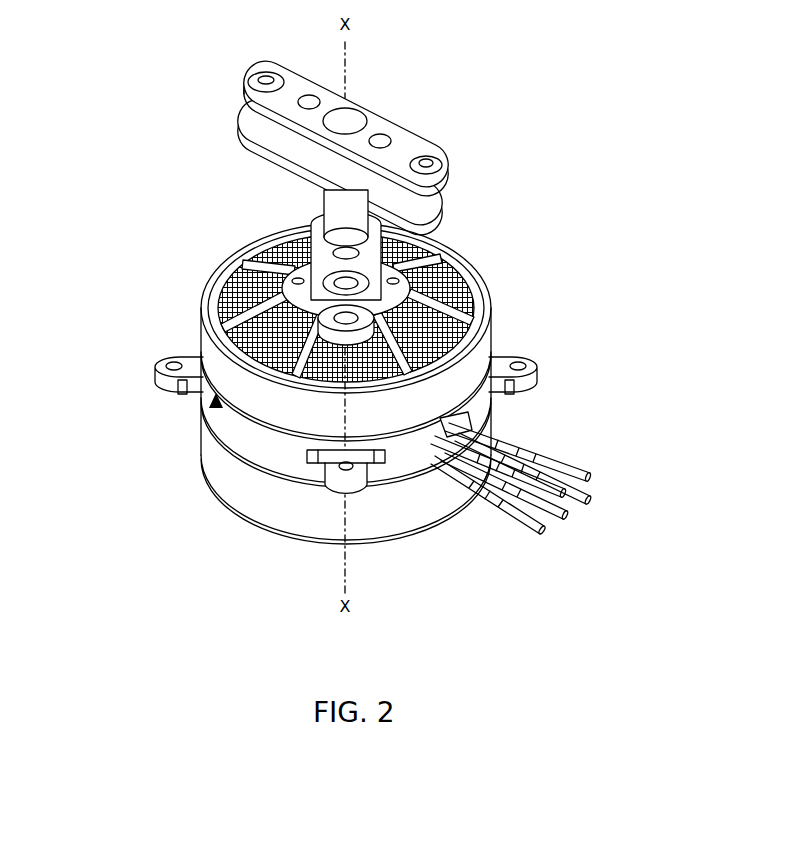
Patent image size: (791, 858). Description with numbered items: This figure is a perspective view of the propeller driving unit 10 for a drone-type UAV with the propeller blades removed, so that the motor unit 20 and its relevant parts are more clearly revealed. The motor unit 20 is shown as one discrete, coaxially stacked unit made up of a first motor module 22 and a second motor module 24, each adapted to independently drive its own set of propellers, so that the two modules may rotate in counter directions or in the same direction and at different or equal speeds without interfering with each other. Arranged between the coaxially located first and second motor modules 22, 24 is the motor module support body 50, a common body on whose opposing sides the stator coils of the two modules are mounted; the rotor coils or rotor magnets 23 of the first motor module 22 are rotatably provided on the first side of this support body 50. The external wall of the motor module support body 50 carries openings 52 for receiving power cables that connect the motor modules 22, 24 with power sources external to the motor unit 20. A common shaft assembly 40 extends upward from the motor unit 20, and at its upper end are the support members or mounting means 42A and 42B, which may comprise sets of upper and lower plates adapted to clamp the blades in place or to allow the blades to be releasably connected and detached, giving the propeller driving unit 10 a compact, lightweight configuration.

The propeller driving unit 10 is at (537, 318).
The motor unit 20 is at (160, 363).
The first motor module 22 is at (223, 363).
The rotor coils or rotor magnets 23 is at (473, 300).
The second motor module 24 is at (225, 473).
The shaft assembly 40 is at (340, 225).
The support member or mounting means 42A is at (412, 147).
The support member or mounting means 42B is at (365, 262).
The motor module support body 50 is at (225, 416).
The openings 52 is at (463, 427).